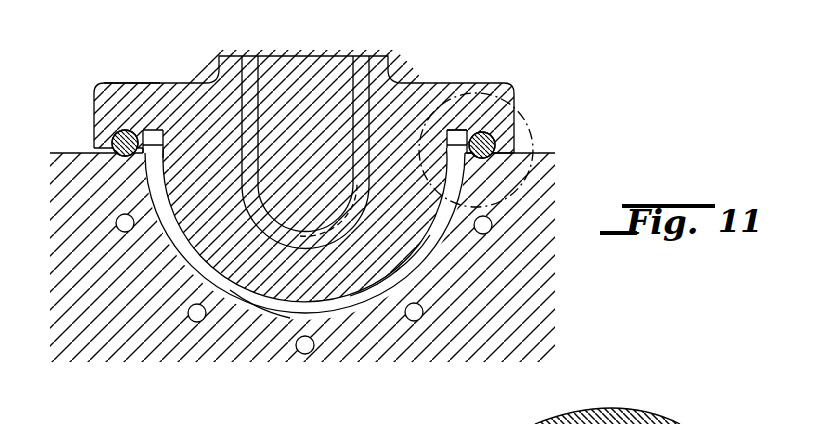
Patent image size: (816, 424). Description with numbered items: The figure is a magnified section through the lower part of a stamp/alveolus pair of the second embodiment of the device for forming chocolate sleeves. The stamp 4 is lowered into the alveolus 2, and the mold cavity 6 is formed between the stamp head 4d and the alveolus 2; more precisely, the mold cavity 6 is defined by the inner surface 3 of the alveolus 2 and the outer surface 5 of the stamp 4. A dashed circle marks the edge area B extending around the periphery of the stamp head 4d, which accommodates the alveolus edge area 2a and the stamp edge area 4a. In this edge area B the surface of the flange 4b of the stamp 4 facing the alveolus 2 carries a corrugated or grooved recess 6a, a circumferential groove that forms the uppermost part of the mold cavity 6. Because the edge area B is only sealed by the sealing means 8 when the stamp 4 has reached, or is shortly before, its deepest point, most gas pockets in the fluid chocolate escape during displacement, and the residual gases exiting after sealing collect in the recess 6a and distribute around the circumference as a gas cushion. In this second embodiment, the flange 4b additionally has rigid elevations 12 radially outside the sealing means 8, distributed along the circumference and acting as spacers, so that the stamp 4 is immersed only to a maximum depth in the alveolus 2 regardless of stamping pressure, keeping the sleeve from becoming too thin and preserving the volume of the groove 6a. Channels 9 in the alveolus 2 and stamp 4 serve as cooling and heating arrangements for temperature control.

The alveolus 2 is at (80, 315).
The alveolus edge area 2a is at (167, 160).
The inner surface of the alveolus 3 is at (254, 305).
The stamp 4 is at (396, 64).
The stamp edge area 4a is at (147, 171).
The flange of the stamp 4b is at (149, 102).
The stamp head 4d is at (412, 249).
The outer surface of the stamp 5 is at (376, 282).
The mold cavity 6 is at (338, 304).
The corrugated or grooved recess 6a is at (452, 130).
The sealing means 8 is at (110, 146).
The channels 9 is at (345, 56).
The rigid elevations 12 is at (506, 141).
The edge area B is at (519, 108).